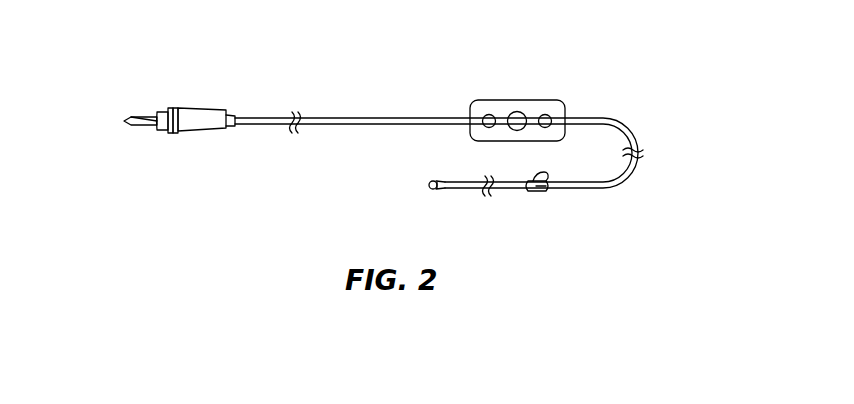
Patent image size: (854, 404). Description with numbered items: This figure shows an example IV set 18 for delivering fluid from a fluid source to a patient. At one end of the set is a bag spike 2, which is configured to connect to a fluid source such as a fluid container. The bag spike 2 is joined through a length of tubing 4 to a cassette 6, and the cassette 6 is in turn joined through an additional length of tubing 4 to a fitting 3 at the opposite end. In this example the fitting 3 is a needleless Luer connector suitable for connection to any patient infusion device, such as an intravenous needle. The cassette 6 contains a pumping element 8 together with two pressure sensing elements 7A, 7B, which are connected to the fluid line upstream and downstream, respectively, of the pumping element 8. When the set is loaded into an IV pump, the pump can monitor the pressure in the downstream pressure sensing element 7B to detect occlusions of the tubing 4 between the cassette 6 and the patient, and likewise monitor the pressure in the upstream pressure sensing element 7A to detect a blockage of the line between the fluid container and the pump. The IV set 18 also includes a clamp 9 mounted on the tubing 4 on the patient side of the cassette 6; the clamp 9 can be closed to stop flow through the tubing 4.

The IV set 18 is at (243, 41).
The bag spike 2 is at (160, 113).
The tubing 4 is at (351, 117).
The cassette 6 is at (531, 100).
The pressure sensing element 7A is at (487, 114).
The pressure sensing element 7B is at (548, 114).
The pumping element 8 is at (517, 131).
The fitting 3 is at (432, 190).
The clamp 9 is at (531, 192).